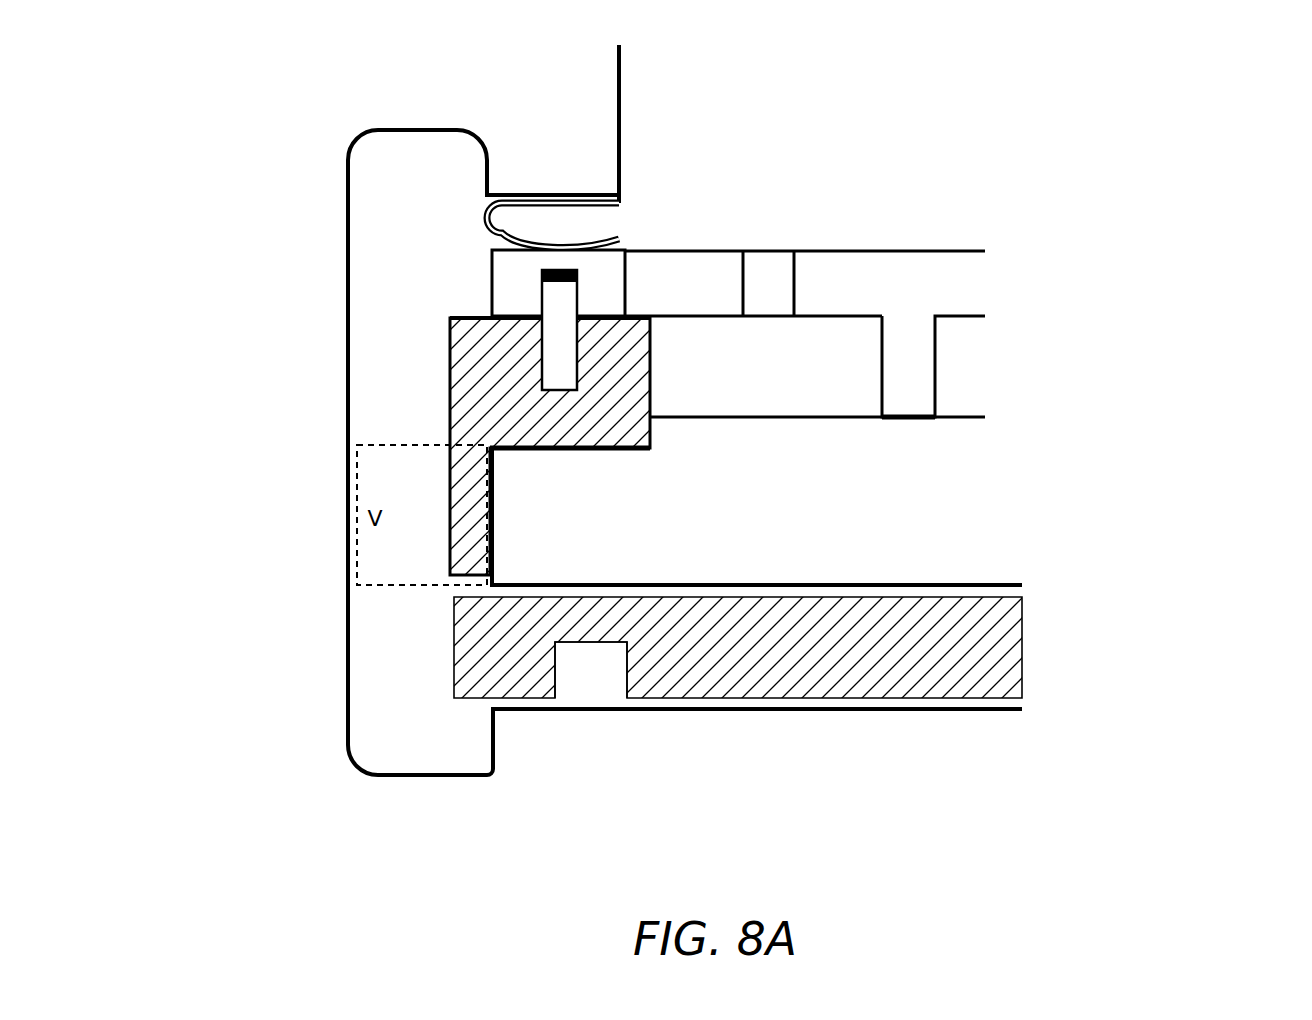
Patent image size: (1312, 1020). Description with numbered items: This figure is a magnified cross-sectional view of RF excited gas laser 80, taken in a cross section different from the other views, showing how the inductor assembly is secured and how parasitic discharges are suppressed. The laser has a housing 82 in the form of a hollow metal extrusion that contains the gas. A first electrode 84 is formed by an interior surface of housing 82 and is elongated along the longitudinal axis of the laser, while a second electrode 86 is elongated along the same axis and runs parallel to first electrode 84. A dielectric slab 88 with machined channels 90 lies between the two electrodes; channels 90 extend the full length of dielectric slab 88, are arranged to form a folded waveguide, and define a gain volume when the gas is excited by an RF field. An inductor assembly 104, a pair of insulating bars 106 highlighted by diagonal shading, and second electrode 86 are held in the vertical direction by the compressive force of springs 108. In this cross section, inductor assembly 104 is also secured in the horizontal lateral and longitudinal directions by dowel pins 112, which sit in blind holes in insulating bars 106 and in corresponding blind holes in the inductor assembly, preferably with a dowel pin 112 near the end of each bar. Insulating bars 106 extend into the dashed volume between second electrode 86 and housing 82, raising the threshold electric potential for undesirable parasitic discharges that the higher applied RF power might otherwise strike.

The RF excited gas laser 80 is at (1168, 143).
The housing 82 is at (136, 561).
The first electrode 84 is at (734, 749).
The second electrode 86 is at (763, 506).
The dielectric slab 88 is at (905, 687).
The channels 90 is at (601, 688).
The inductor assembly 104 is at (843, 262).
The insulating bars 106 is at (452, 391).
The springs 108 is at (483, 222).
The dowel pins 112 is at (552, 352).